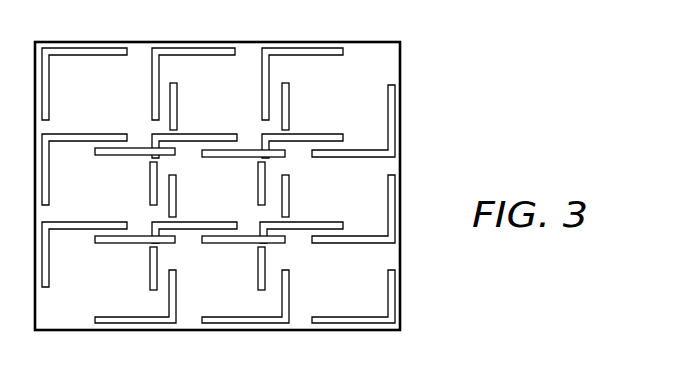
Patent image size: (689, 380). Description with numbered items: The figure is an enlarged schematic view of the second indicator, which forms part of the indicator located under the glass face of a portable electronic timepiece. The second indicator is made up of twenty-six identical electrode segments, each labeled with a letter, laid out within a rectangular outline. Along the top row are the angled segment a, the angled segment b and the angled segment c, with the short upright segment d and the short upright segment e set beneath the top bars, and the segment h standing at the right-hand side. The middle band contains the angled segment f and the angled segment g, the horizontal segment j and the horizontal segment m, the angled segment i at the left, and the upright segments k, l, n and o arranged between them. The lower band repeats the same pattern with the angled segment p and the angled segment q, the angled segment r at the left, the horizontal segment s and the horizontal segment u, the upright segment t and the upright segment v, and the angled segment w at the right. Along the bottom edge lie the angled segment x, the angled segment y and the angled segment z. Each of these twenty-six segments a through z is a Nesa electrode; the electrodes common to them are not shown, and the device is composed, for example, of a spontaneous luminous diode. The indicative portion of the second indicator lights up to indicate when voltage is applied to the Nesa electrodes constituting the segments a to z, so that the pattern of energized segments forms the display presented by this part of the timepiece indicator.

The segment a is at (91, 57).
The segment b is at (200, 57).
The segment c is at (335, 57).
The segment d is at (177, 93).
The segment e is at (289, 93).
The segment f is at (197, 133).
The segment g is at (307, 134).
The segment h is at (388, 105).
The segment i is at (49, 184).
The segment j is at (107, 157).
The segment k is at (150, 185).
The segment l is at (176, 185).
The segment m is at (240, 158).
The segment n is at (258, 195).
The segment o is at (289, 188).
The segment p is at (193, 232).
The segment q is at (322, 222).
The segment r is at (49, 258).
The segment s is at (112, 245).
The segment t is at (148, 277).
The segment u is at (230, 244).
The segment v is at (267, 257).
The segment w is at (357, 245).
The segment x is at (176, 295).
The segment y is at (289, 288).
The segment z is at (388, 287).